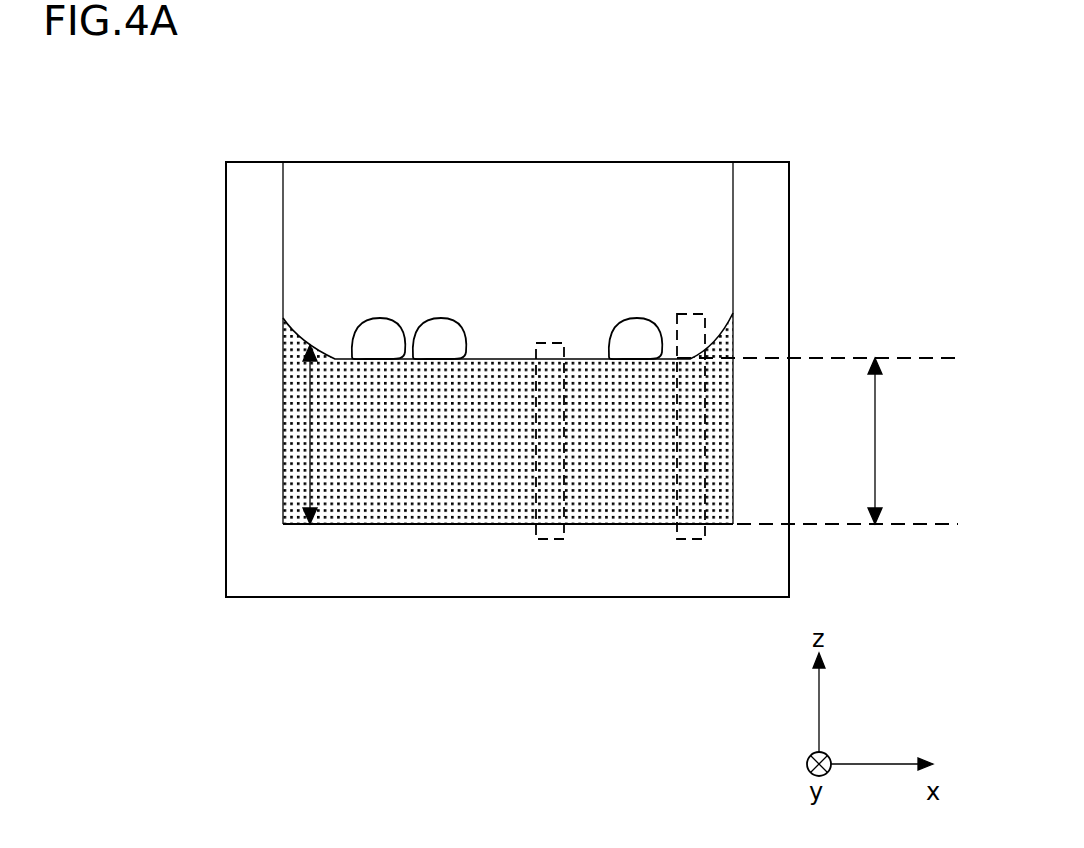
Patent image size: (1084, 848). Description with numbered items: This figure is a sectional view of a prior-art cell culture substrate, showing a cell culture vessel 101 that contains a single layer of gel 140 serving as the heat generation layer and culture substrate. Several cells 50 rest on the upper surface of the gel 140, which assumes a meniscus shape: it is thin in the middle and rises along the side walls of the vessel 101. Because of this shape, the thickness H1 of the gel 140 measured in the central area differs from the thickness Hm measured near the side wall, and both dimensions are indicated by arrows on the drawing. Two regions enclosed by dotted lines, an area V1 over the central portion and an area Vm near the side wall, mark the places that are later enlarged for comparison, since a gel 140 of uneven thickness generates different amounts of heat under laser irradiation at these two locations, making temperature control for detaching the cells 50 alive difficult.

The cell 50 is at (633, 328).
The cell culture vessel 101 is at (828, 120).
The gel 140 is at (480, 503).
The thickness of the gel near the side wall Hm is at (308, 397).
The thickness of the gel in the central area H1 is at (817, 441).
The area V1 is at (562, 540).
The area Vm is at (678, 540).